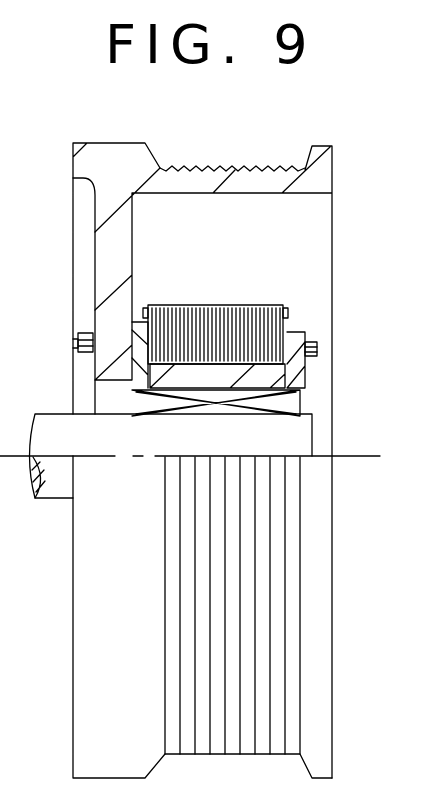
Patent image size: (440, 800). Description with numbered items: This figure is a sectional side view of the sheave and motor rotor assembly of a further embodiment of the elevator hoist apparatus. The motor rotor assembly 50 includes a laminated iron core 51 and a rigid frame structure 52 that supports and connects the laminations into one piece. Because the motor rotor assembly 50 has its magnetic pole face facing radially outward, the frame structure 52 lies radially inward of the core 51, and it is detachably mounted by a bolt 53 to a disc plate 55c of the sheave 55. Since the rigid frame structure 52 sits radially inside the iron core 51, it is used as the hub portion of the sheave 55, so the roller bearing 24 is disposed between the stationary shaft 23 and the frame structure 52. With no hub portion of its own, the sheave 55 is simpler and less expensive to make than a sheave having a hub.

The sheave 55 is at (330, 146).
The disc plate 55c is at (95, 308).
The motor rotor assembly 50 is at (183, 305).
The laminated iron core 51 is at (266, 305).
The rigid frame structure 52 is at (297, 378).
The bolt 53 is at (318, 350).
The roller bearing 24 is at (290, 404).
The stationary shaft 23 is at (305, 445).